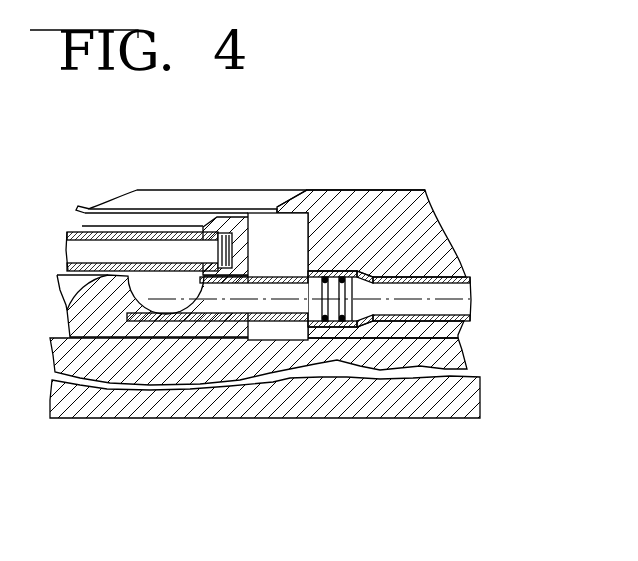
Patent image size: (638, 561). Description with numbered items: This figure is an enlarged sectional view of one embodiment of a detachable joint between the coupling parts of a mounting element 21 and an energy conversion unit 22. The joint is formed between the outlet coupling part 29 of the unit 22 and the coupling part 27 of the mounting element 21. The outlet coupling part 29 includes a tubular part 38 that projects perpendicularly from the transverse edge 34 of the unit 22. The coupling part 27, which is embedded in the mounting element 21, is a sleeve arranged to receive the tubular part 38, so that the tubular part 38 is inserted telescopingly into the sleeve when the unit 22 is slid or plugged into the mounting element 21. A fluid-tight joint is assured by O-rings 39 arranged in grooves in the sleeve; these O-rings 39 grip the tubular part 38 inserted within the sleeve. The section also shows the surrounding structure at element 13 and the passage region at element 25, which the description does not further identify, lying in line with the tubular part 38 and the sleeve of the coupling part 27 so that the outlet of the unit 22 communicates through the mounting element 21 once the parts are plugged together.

The wall 13 is at (314, 339).
The mounting element 21 is at (440, 226).
The energy conversion unit 22 is at (170, 228).
The pipe 25 is at (450, 292).
The coupling part 27 is at (371, 326).
The outlet coupling part 29 is at (406, 189).
The transverse edge 34 is at (276, 270).
The tubular part 38 is at (275, 323).
The O-rings 39 is at (350, 322).